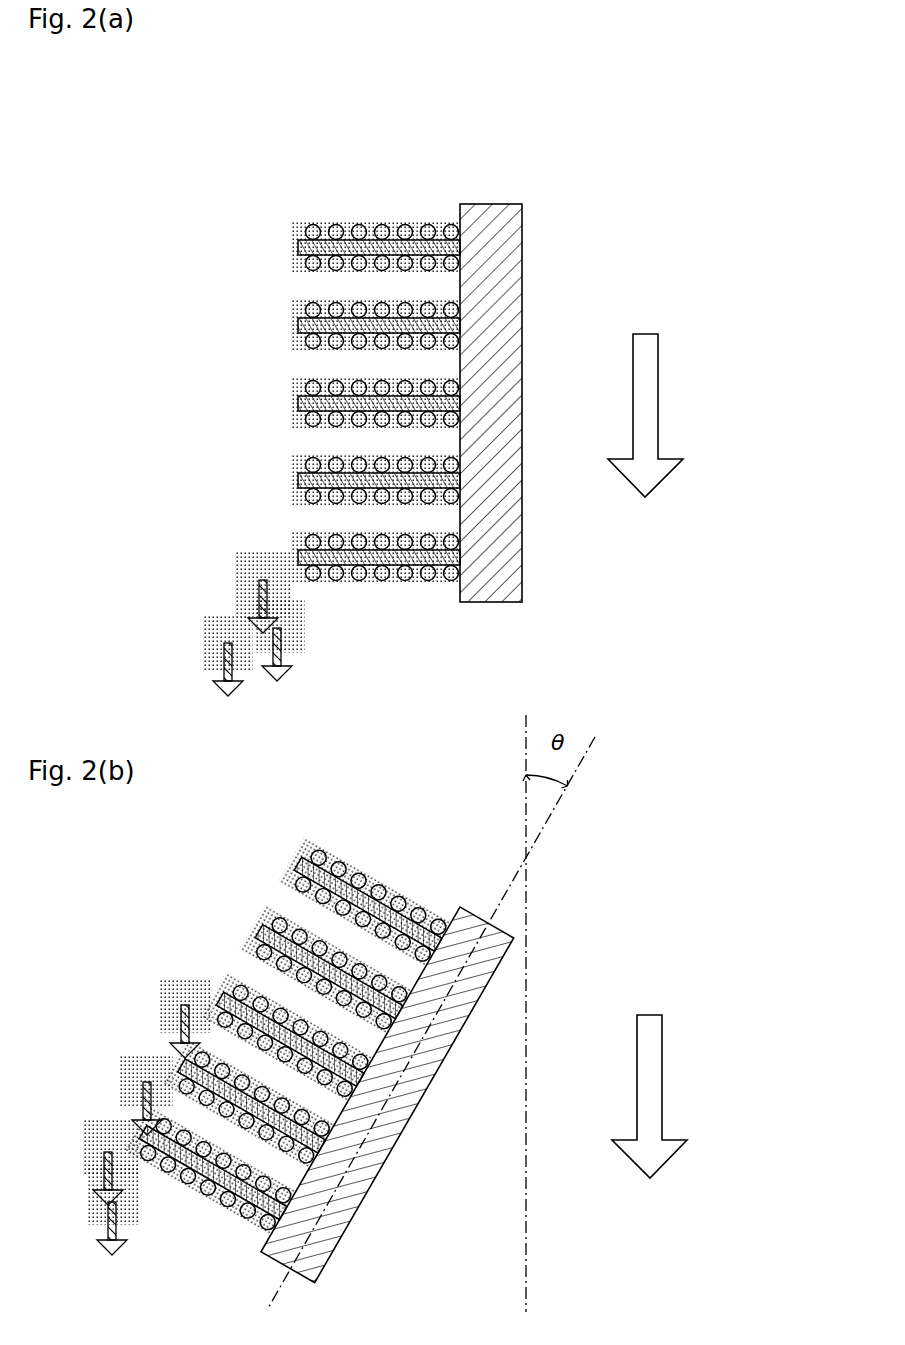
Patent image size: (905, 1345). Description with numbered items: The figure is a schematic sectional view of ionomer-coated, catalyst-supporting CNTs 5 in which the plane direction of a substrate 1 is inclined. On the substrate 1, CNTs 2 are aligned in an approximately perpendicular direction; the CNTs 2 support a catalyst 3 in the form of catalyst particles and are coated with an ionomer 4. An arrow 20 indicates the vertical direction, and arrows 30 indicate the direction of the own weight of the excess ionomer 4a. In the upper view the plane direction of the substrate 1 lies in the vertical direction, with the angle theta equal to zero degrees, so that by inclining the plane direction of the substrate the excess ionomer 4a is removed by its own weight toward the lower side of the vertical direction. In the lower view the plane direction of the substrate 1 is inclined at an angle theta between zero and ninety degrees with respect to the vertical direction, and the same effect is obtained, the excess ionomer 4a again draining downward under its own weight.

In FIG. 2A, the substrate 1 is at (487, 208).
In FIG. 2B, the substrate 1 is at (465, 908).
In FIG. 2A, the CNTs 2 is at (417, 250).
In FIG. 2B, the CNTs 2 is at (296, 1030).
In FIG. 2A, the catalyst 3 is at (333, 226).
In FIG. 2B, the catalyst 3 is at (342, 862).
In FIG. 2A, the ionomer 4 is at (388, 245).
In FIG. 2B, the ionomer 4 is at (390, 898).
In FIG. 2A, the ionomer 4a is at (252, 560).
In FIG. 2B, the ionomer 4a is at (98, 1128).
In FIG. 2A, the ionomer-coated, catalyst-supporting CNTs 5 is at (331, 381).
In FIG. 2B, the ionomer-coated, catalyst-supporting CNTs 5 is at (276, 1000).
In FIG. 2A, the arrow 20 is at (645, 408).
In FIG. 2B, the arrow 20 is at (648, 1090).
In FIG. 2A, the arrows 30 is at (277, 655).
In FIG. 2B, the arrows 30 is at (120, 1240).